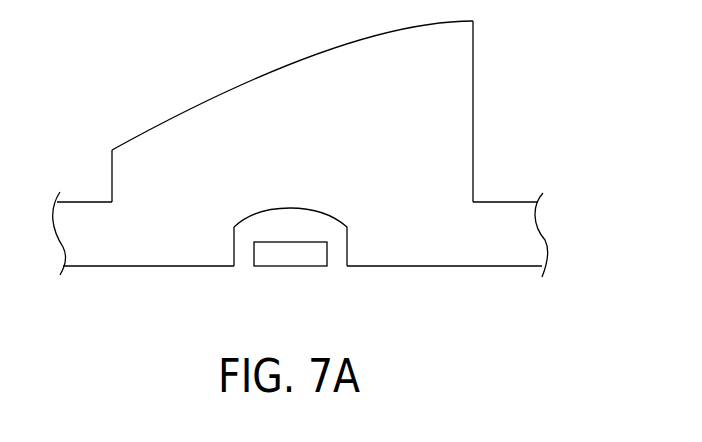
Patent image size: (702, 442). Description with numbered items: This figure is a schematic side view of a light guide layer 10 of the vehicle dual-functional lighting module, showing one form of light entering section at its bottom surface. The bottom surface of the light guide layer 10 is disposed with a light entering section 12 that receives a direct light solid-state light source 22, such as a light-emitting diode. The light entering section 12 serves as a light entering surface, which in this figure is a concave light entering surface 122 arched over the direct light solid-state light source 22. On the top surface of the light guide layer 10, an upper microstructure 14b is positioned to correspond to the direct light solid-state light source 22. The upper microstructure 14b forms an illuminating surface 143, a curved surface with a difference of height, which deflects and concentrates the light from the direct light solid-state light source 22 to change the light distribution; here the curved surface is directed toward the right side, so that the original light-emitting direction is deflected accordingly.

The light guide layer 10 is at (505, 202).
The light entering section 12 is at (304, 270).
The direct light solid-state light source 22 is at (291, 255).
The concave light entering surface 122 is at (331, 215).
The illuminating surface 143 is at (222, 90).
The upper microstructure 14b is at (473, 108).